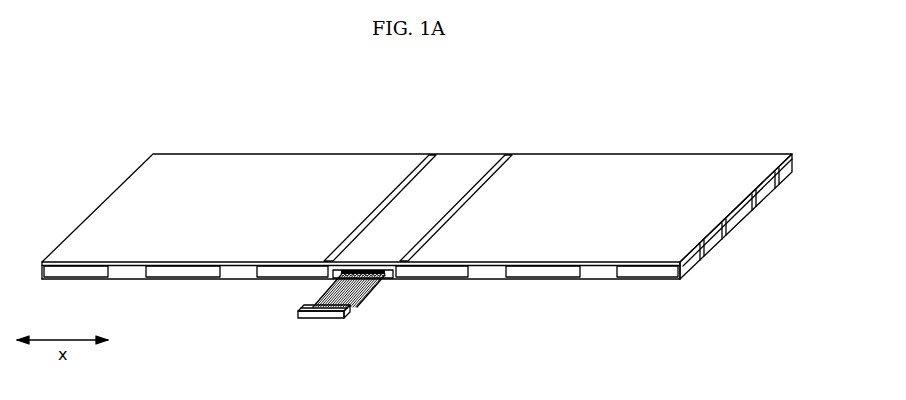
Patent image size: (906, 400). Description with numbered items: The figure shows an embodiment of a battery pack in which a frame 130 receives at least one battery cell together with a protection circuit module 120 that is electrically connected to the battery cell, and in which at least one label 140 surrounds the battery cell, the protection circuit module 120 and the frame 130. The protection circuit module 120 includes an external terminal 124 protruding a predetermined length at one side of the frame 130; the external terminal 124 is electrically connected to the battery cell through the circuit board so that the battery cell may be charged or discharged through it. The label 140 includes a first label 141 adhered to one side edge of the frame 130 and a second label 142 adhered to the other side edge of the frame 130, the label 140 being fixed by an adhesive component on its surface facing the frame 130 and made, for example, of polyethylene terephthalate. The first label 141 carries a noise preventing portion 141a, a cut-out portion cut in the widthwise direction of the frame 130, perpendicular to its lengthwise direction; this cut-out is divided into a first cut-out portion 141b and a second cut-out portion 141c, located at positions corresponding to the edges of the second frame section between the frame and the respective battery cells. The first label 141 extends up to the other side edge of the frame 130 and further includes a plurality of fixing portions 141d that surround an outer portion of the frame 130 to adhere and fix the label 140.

The protection circuit module 120 is at (387, 277).
The external terminal 124 is at (322, 313).
The frame 130 is at (432, 272).
The label 140 is at (272, 330).
The first label 141 is at (223, 248).
The noise preventing portion 141a is at (527, 97).
The first cut-out portion 141b is at (418, 157).
The second cut-out portion 141c is at (500, 157).
The fixing portions 141d is at (599, 270).
The second label 142 is at (323, 281).